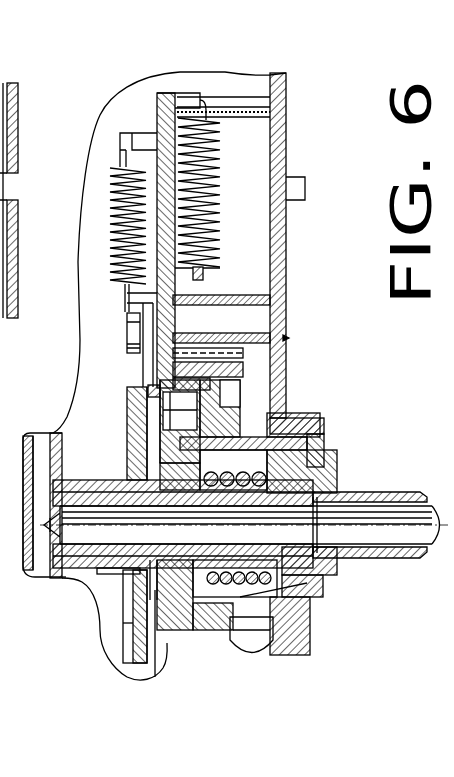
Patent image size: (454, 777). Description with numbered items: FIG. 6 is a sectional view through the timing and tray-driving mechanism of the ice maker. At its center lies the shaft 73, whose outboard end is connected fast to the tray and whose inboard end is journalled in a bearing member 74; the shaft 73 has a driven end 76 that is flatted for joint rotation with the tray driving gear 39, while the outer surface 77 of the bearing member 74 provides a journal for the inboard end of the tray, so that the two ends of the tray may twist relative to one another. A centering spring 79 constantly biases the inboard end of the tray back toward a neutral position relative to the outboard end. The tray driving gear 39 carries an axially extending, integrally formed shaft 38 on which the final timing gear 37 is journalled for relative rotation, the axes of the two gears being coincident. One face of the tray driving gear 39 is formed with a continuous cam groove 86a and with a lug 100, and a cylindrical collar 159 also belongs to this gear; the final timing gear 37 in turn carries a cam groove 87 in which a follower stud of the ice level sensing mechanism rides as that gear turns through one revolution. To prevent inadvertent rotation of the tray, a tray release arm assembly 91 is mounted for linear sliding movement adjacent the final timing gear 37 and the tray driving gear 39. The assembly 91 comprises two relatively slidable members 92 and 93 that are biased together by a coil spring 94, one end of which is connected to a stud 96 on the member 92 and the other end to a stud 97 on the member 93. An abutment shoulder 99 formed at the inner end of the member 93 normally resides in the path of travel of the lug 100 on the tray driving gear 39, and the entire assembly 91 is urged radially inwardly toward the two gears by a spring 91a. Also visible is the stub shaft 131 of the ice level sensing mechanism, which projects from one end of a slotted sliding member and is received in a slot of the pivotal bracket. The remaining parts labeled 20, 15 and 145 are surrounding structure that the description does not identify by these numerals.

The housing 20 is at (288, 127).
The stud 96 is at (207, 97).
The tray release arm assembly 91 is at (172, 84).
The slidable member 92 is at (163, 110).
The coil spring 94 is at (200, 192).
The stud 97 is at (205, 272).
The spring 91a is at (117, 202).
The slidable member 93 is at (133, 293).
The abutment shoulder 99 is at (154, 390).
The tray driving gear 39 is at (246, 330).
The valve assembly 15 is at (289, 338).
The cam groove 86a is at (237, 372).
The lug 100 is at (247, 372).
The shaft 38 is at (88, 490).
The end cap 145 is at (15, 460).
The shaft 73 is at (440, 548).
The outer surface 77 is at (380, 491).
The bearing member 74 is at (367, 562).
The centering spring 79 is at (305, 586).
The driven end 76 is at (260, 590).
The pin 159 is at (263, 617).
The cam groove 87 is at (123, 637).
The final timing gear 37 is at (127, 677).
The stub shaft 131 is at (73, 569).